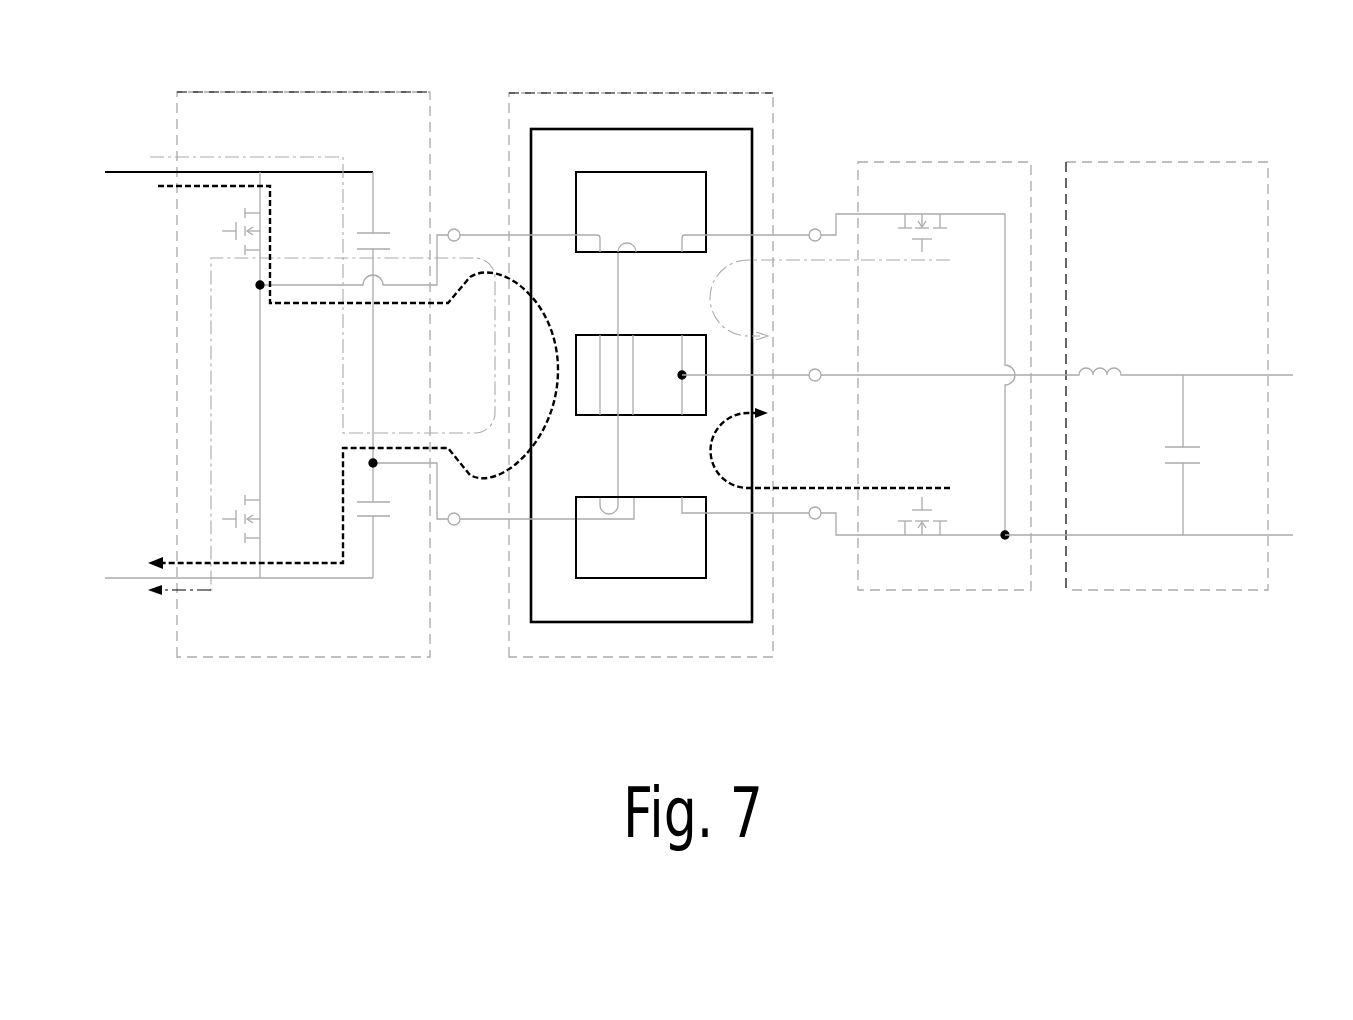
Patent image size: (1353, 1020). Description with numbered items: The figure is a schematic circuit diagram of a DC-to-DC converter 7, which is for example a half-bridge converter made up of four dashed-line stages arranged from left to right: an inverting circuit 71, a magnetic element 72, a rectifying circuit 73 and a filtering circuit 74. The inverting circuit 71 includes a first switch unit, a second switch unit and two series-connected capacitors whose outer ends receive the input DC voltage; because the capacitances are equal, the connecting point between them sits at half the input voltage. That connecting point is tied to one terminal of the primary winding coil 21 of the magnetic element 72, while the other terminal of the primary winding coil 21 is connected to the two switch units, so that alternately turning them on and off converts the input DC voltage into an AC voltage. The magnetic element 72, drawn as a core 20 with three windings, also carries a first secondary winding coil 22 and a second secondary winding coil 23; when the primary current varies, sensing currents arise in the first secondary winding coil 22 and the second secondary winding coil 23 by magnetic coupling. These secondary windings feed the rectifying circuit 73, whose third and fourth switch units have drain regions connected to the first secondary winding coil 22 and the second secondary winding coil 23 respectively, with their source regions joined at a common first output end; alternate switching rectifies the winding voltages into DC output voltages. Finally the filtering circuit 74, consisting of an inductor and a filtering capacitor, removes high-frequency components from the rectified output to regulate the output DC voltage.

The DC-to-DC converter 7 is at (73, 102).
The transformer 20 is at (637, 148).
The primary winding coil 21 is at (472, 235).
The first secondary winding coil 22 is at (786, 235).
The second secondary winding coil 23 is at (786, 520).
The inverting circuit 71 is at (303, 657).
The magnetic element 72 is at (643, 658).
The rectifying circuit 73 is at (945, 592).
The filtering circuit 74 is at (1165, 592).